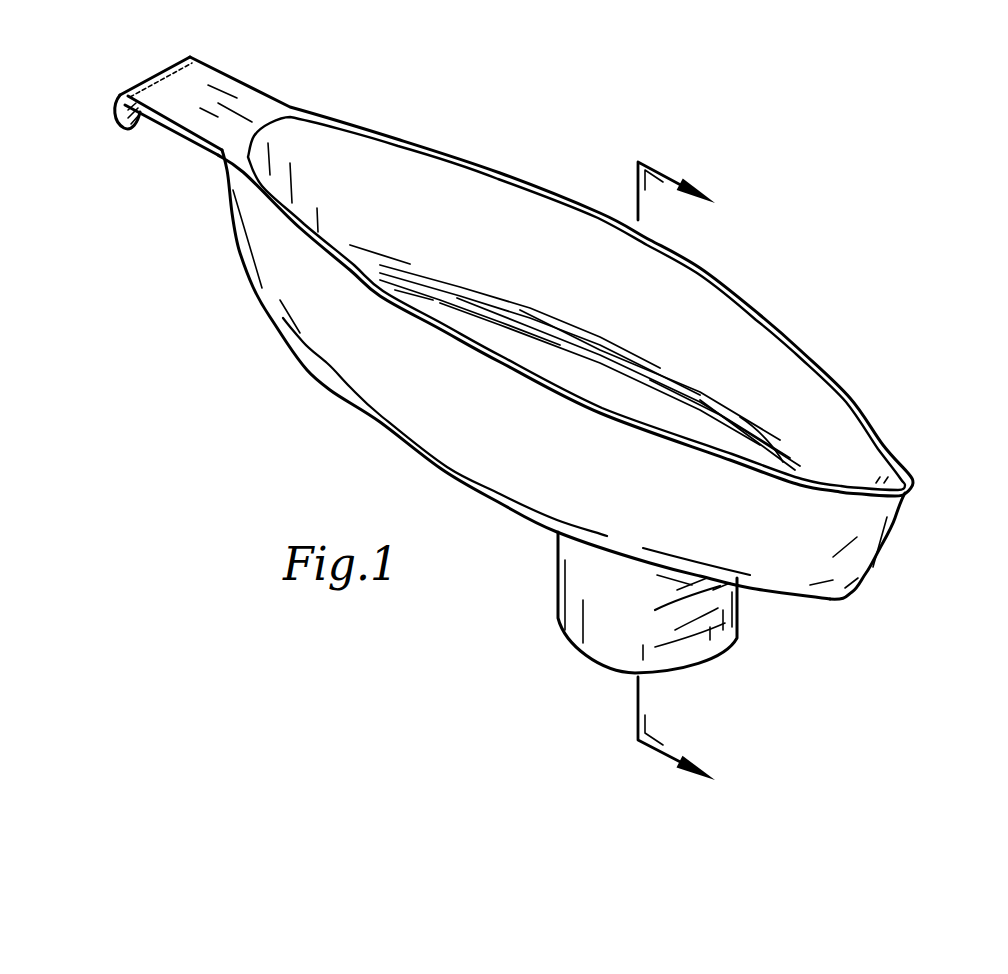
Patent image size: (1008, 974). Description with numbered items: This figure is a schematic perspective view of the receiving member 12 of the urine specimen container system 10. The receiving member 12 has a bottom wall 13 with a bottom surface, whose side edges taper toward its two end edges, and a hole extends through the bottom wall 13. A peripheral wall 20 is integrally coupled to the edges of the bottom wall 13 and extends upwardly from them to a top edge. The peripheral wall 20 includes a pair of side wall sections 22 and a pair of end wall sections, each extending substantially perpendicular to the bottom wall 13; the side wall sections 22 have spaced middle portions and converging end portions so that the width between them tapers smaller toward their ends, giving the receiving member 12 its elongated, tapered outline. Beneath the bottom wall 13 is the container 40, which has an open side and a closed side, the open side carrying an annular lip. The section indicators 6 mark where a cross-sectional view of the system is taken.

The urine specimen container system 10 is at (214, 362).
The receiving member 12 is at (895, 540).
The bottom wall 13 is at (600, 393).
The peripheral wall 20 is at (357, 363).
The side wall sections 22 is at (427, 142).
The container 40 is at (583, 600).
The section line 6- 6 is at (687, 497).